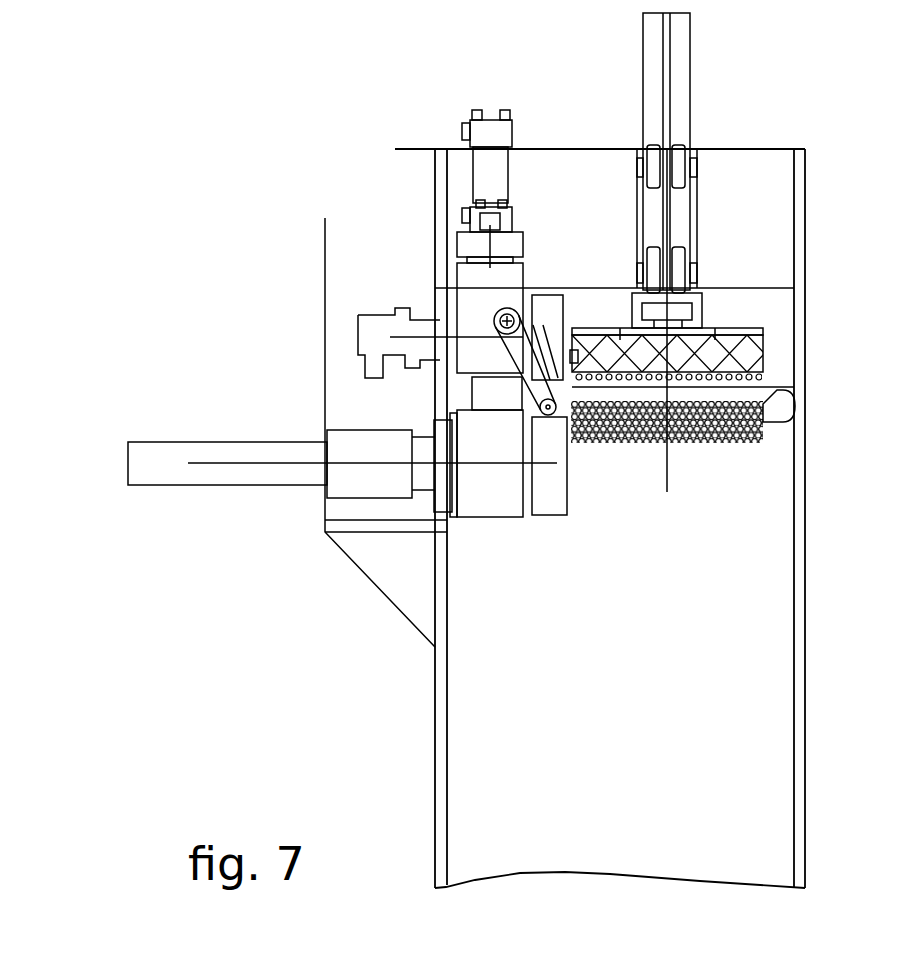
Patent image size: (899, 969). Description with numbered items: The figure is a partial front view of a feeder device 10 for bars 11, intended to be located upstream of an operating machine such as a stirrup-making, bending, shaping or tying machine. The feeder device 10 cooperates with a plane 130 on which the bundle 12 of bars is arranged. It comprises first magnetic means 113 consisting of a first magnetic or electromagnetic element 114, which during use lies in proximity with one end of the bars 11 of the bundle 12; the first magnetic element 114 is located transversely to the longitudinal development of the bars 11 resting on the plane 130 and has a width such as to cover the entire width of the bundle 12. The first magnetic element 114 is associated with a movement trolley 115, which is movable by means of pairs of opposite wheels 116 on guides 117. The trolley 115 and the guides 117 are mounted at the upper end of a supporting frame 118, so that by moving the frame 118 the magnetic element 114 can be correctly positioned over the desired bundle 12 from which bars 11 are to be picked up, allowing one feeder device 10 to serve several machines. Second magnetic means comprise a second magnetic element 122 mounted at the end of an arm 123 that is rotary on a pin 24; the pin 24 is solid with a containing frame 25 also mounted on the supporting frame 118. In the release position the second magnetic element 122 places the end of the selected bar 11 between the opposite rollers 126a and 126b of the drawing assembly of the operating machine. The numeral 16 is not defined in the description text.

The feeder device 10 is at (813, 87).
The bars 11 is at (552, 412).
The bundle of bars 12 is at (709, 455).
The guide rollers 16 is at (655, 175).
The pin 24 is at (570, 352).
The containing frame 25 is at (519, 273).
The first magnetic means 113 is at (788, 340).
The first magnetic element 114 is at (732, 357).
The movement trolley 115 is at (680, 219).
The pairs of opposite wheels 116 is at (680, 262).
The guides 117 is at (686, 87).
The supporting frame 118 is at (784, 205).
The second magnetic element 122 is at (553, 398).
The arm 123 is at (530, 392).
The roller 126a is at (551, 508).
The roller 126b is at (548, 297).
The plane 130 is at (778, 423).